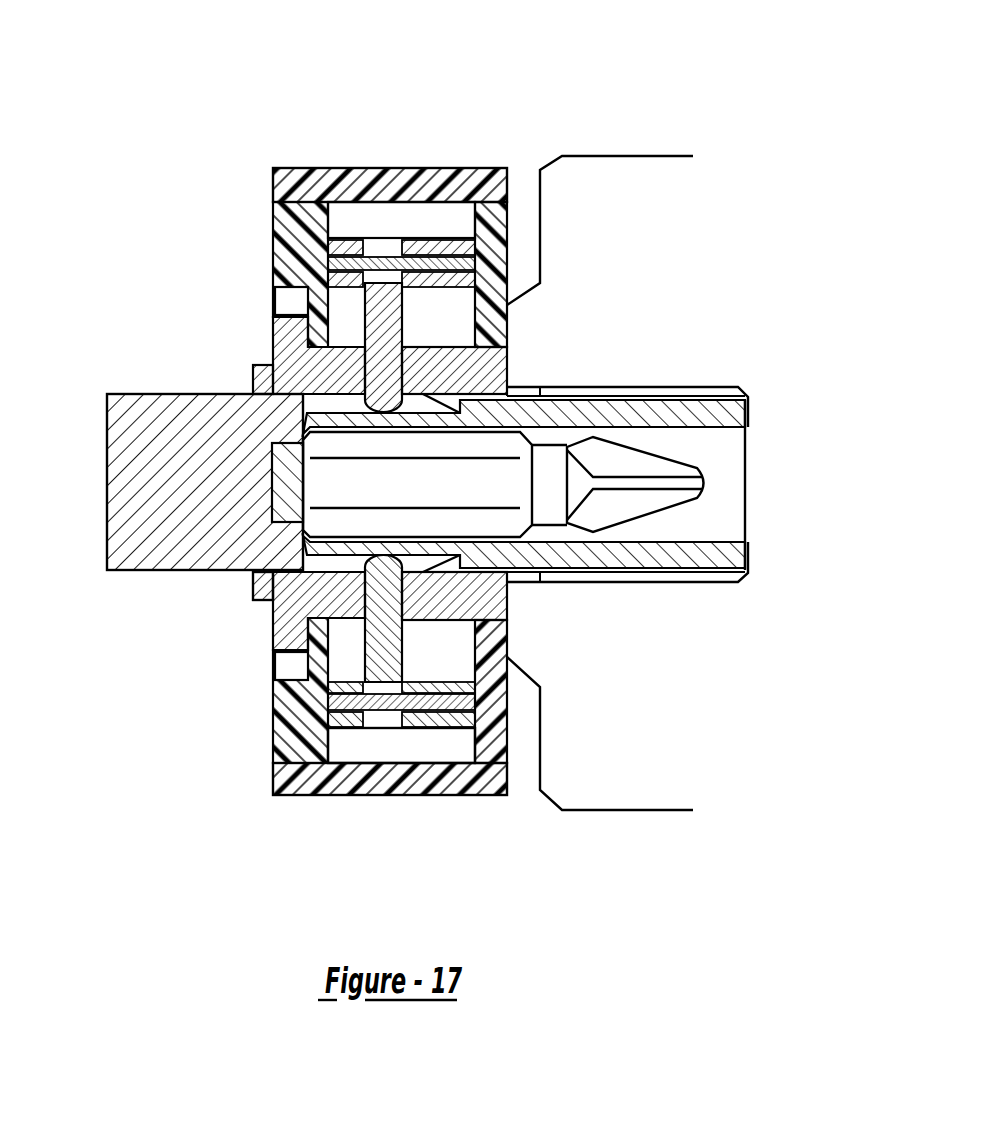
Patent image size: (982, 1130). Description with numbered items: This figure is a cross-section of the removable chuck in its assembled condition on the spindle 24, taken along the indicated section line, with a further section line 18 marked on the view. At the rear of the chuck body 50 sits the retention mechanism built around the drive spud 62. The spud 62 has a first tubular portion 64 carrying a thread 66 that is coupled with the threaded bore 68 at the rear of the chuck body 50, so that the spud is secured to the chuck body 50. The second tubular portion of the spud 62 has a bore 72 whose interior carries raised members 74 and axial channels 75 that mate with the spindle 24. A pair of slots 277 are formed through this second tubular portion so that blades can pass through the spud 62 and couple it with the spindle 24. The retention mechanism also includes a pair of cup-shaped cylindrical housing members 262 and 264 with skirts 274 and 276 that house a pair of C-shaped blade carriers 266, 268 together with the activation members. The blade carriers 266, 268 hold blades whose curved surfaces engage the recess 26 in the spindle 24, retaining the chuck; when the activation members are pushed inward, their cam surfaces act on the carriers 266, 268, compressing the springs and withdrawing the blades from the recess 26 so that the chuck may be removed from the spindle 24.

The section line 18- 18 is at (420, 106).
The spindle 24 is at (143, 462).
The recess 26 is at (320, 548).
The chuck body 50 is at (655, 155).
The drive spud 62 is at (262, 335).
The first tubular portion 64 is at (745, 407).
The thread 66 is at (718, 396).
The threaded bore 68 is at (657, 392).
The bore 72 is at (312, 403).
The raised members 74 is at (458, 403).
The axial channels 75 is at (313, 558).
The housing member 262 is at (510, 172).
The housing member 264 is at (380, 414).
The blade carrier 266 is at (445, 225).
The blade carrier 268 is at (454, 737).
The skirt 274 is at (417, 172).
The skirt 276 is at (312, 170).
The slots 277 is at (390, 346).